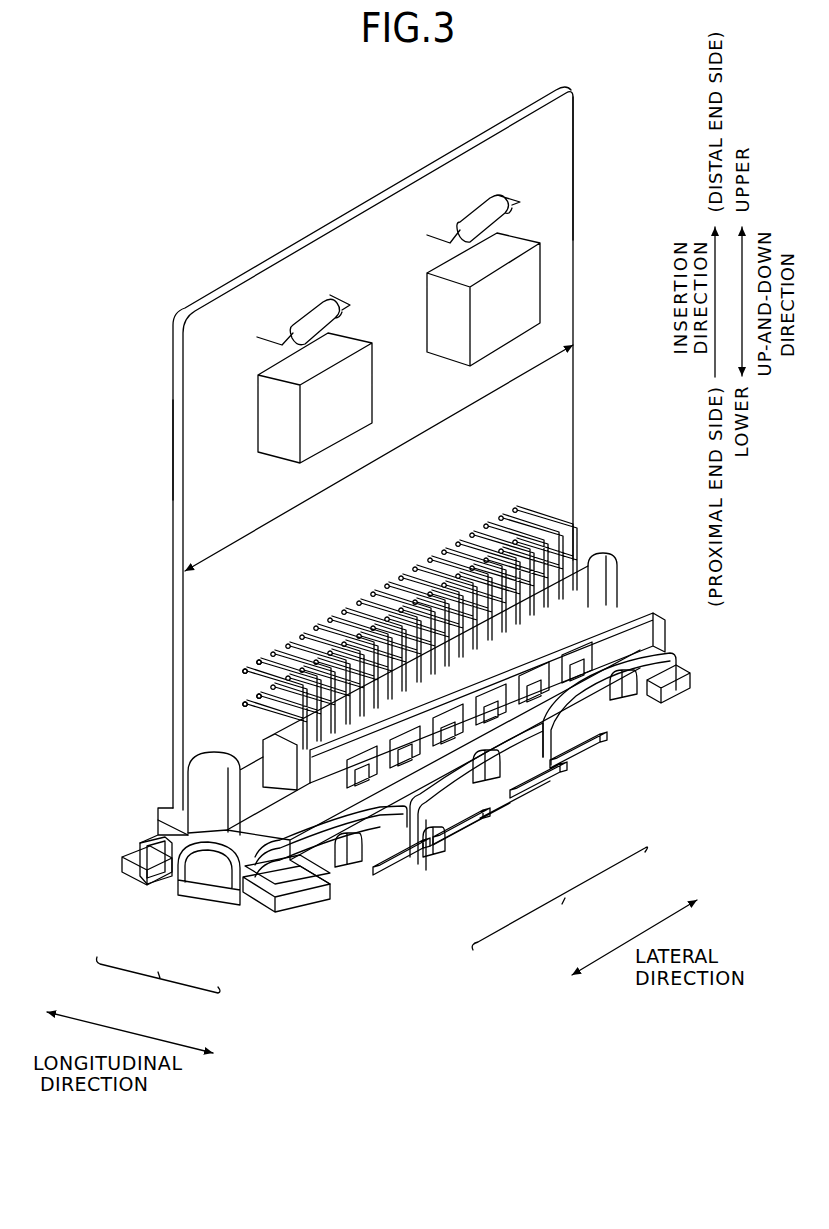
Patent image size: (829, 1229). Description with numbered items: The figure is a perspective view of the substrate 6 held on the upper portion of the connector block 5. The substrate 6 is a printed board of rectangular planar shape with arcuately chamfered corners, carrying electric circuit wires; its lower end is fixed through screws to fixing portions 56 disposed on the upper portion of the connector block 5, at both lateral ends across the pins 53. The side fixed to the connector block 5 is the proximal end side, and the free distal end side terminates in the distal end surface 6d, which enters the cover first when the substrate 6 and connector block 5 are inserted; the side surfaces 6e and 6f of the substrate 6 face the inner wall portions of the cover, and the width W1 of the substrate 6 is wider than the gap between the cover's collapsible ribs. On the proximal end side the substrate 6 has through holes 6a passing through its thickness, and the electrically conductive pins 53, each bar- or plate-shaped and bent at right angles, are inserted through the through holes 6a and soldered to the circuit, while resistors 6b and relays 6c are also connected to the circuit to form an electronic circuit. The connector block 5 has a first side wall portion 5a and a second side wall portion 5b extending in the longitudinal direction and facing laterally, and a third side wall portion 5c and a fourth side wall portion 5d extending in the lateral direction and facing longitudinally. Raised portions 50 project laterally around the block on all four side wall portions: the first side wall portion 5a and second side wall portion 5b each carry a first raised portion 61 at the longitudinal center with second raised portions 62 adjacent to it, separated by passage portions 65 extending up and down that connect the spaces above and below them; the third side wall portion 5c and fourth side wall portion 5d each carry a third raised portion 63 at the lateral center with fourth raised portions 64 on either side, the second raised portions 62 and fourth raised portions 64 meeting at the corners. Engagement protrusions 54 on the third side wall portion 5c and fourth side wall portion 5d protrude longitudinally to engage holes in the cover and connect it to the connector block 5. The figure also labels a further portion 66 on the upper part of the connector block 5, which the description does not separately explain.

The connector block 5 is at (390, 773).
The first side wall portion 5a is at (184, 838).
The second side wall portion 5b is at (671, 633).
The third side wall portion 5c is at (327, 855).
The fourth side wall portion 5d is at (146, 813).
The substrate 6 is at (336, 213).
The through holes 6a is at (258, 694).
The resistors 6b is at (316, 318).
The relays 6c is at (282, 374).
The distal end surface 6d is at (425, 233).
The side surface 6e is at (173, 430).
The side surface 6f is at (573, 192).
The raised portions 50 is at (371, 926).
The pins 53 is at (300, 722).
The engagement protrusions 54 is at (408, 858).
The fixing portions 56 is at (190, 772).
The first raised portion 61 is at (190, 884).
The second raised portions 62 is at (140, 884).
The third raised portion 63 is at (503, 852).
The fourth raised portions 64 is at (362, 880).
The passage portion 65 is at (153, 890).
The bow rib 66 is at (406, 797).
The width of the substrate W1 is at (379, 458).